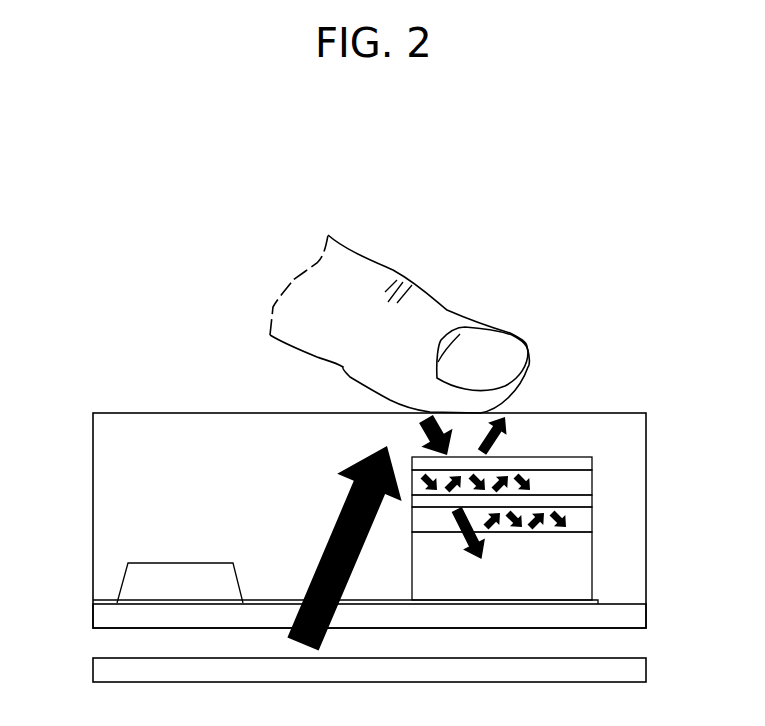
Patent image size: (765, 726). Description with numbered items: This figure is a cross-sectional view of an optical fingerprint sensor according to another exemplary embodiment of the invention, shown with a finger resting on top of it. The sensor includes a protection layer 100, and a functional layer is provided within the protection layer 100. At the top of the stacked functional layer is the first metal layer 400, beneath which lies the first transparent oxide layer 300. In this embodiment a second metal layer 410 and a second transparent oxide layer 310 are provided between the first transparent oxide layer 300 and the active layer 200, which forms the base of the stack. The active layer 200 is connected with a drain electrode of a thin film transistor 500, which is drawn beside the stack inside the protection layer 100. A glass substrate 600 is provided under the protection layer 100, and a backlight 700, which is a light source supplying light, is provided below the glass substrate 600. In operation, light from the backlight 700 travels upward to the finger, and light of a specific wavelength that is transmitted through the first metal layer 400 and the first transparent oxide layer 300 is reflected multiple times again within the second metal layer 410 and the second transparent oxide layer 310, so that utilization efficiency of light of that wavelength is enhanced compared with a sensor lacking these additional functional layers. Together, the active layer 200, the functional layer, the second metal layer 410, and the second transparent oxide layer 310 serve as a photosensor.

The protection layer 100 is at (97, 492).
The active layer 200 is at (587, 556).
The first transparent oxide layer 300 is at (592, 480).
The second transparent oxide layer 310 is at (592, 520).
The first metal layer 400 is at (592, 463).
The second metal layer 410 is at (592, 501).
The thin film transistor 500 is at (135, 578).
The glass substrate 600 is at (642, 613).
The backlight 700 is at (93, 671).